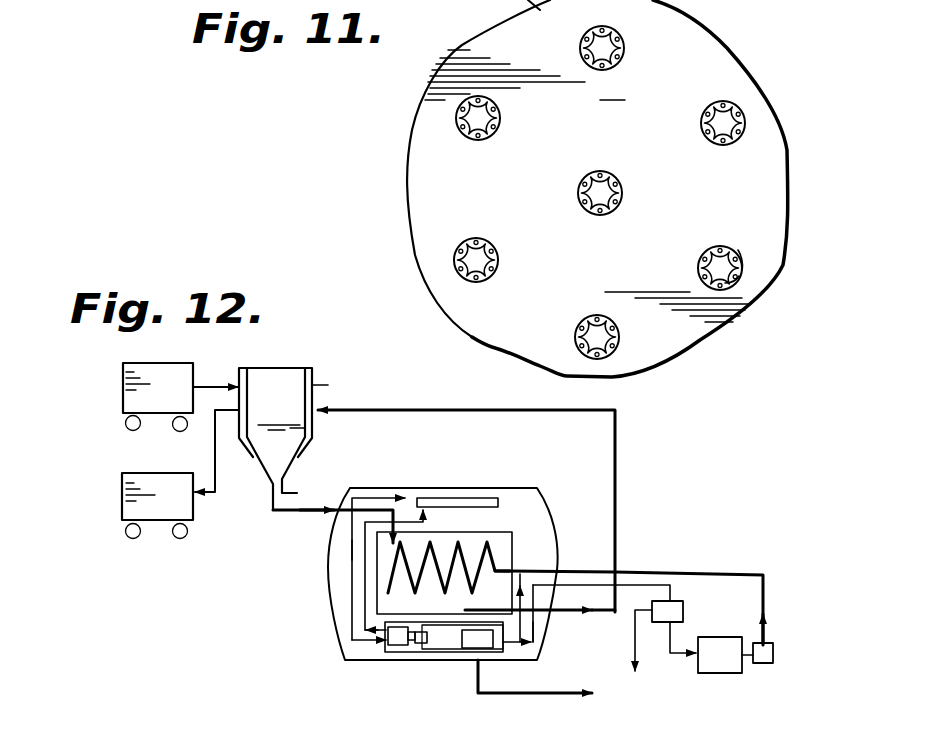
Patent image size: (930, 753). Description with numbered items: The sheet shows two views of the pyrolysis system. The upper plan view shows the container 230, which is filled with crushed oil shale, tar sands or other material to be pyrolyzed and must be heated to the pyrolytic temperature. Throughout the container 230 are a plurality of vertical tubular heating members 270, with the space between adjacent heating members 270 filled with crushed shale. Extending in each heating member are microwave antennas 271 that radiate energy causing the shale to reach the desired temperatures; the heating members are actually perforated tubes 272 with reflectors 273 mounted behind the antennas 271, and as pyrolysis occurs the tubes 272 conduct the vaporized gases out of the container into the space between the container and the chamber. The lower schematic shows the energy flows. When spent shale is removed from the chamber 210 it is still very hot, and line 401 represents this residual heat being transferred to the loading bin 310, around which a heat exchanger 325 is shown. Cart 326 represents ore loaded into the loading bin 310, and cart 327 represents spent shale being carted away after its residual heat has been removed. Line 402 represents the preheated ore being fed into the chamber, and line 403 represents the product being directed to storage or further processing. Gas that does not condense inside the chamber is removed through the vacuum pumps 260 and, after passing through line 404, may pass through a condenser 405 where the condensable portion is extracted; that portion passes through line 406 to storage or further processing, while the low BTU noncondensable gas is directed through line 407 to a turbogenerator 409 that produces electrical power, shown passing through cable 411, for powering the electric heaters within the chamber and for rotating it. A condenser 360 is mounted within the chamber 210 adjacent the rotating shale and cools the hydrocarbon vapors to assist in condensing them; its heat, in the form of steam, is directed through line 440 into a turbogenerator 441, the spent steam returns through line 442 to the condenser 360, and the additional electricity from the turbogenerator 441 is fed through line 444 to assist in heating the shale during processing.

In FIG. 11, the vertical tubular heating members 270 is at (624, 36).
In FIG. 11, the microwave antennas 271 is at (683, 380).
In FIG. 11, the perforated tubes 272 is at (741, 257).
In FIG. 11, the reflectors 273 is at (733, 288).
In FIG. 12, the chamber 210 is at (320, 578).
In FIG. 12, the container 230 is at (518, 546).
In FIG. 12, the vacuum pumps 260 is at (470, 649).
In FIG. 12, the loading bin 310 is at (283, 375).
In FIG. 12, the heat exchanger 325 is at (328, 385).
In FIG. 12, the cart 326 is at (120, 385).
In FIG. 12, the cart 327 is at (120, 483).
In FIG. 12, the condenser 360 is at (450, 497).
In FIG. 12, the line 401 is at (615, 458).
In FIG. 12, the line 402 is at (297, 493).
In FIG. 12, the line 403 is at (543, 694).
In FIG. 12, the line 404 is at (534, 627).
In FIG. 12, the condenser 405 is at (683, 612).
In FIG. 12, the line 406 is at (626, 645).
In FIG. 12, the line 407 is at (673, 656).
In FIG. 12, the turbogenerator 409 is at (770, 678).
In FIG. 12, the cable 411 is at (763, 590).
In FIG. 12, the line 440 is at (352, 600).
In FIG. 12, the turbogenerator 441 is at (397, 645).
In FIG. 12, the line 442 is at (353, 540).
In FIG. 12, the line 444 is at (438, 628).